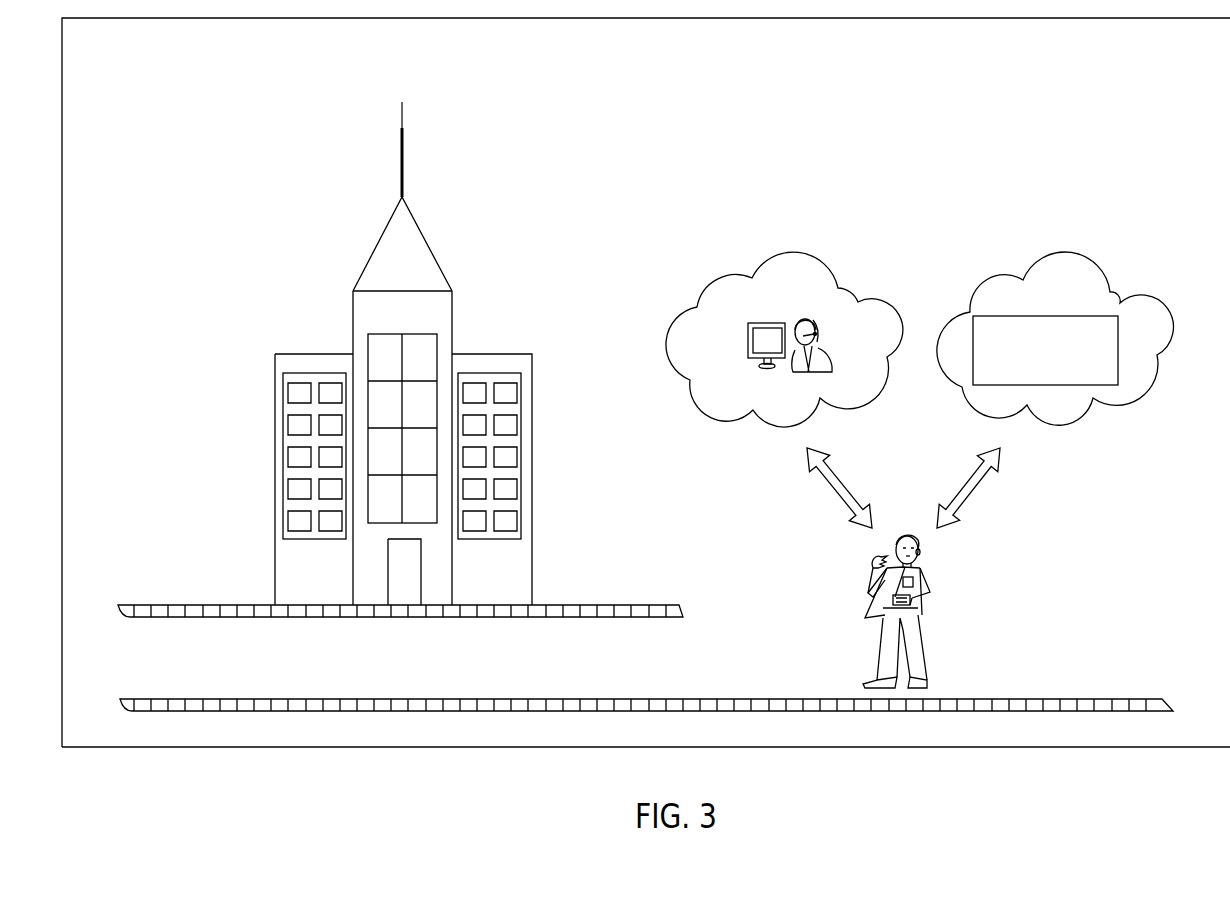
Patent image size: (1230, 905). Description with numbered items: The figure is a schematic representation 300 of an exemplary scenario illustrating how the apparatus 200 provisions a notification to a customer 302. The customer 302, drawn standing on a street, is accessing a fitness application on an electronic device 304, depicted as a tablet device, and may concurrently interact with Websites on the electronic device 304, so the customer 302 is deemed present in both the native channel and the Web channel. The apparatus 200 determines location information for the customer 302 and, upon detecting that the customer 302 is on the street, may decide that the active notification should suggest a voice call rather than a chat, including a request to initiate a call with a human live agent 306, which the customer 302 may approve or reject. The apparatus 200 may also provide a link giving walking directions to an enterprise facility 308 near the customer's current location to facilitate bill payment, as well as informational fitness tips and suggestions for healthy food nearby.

The schematic representation 300 is at (1216, 81).
The facility 308 is at (485, 265).
The live agent 306 is at (814, 245).
The apparatus 200 is at (1047, 316).
The customer 302 is at (922, 610).
The electronic device 304 is at (887, 603).